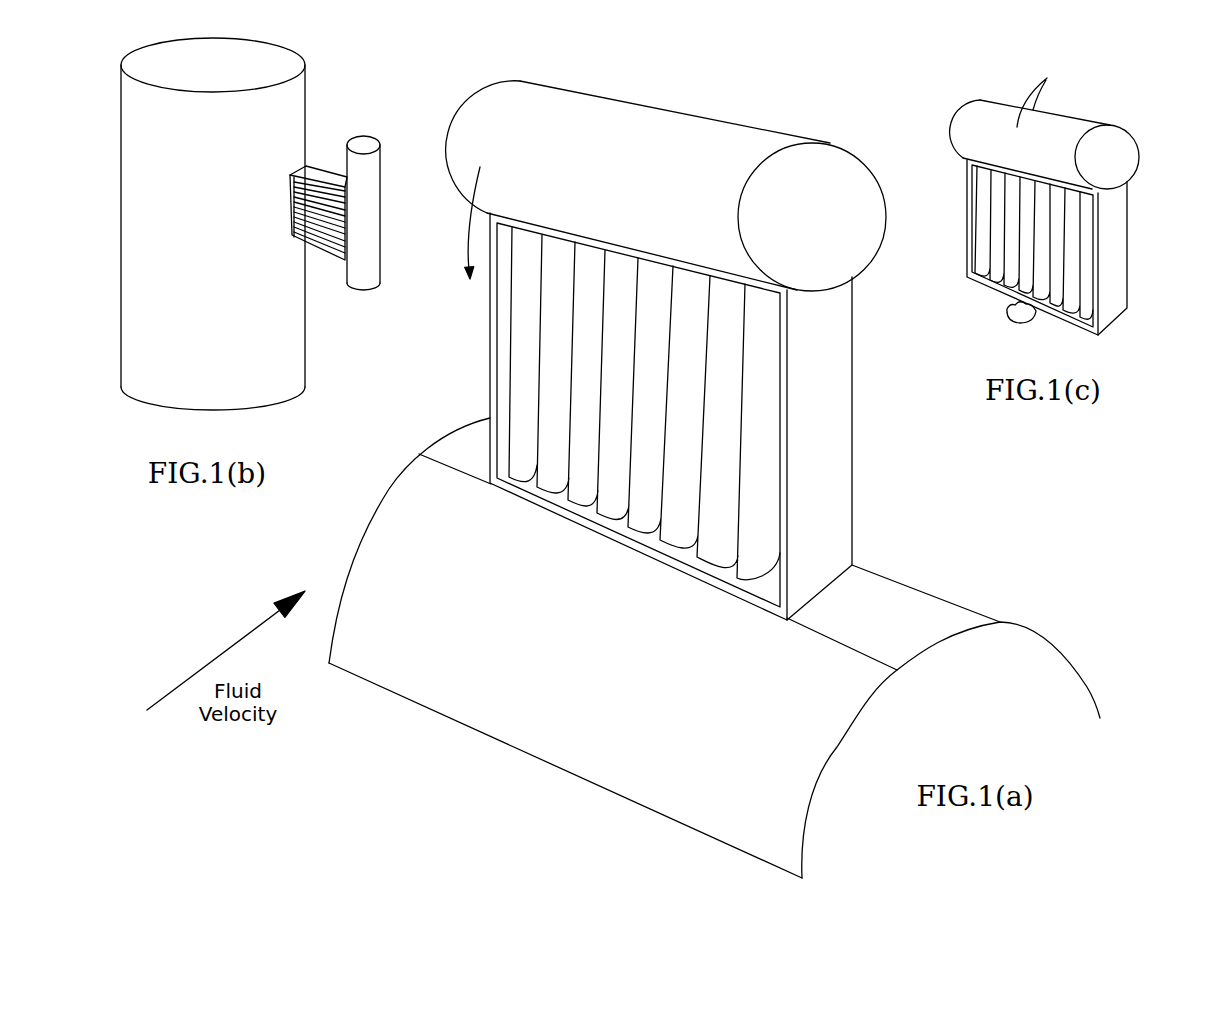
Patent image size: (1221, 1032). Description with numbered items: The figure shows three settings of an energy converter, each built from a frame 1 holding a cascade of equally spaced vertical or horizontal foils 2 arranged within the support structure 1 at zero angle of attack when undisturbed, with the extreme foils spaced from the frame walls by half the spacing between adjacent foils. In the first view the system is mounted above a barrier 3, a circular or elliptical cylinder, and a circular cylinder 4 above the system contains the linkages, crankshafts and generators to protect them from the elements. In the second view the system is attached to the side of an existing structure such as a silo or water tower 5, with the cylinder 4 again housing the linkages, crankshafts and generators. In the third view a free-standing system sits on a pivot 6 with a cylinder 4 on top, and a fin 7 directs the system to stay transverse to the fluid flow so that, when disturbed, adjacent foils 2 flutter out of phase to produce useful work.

In FIG. 1A, the frame 1 is at (655, 416).
In FIG. 1B, the frame 1 is at (272, 182).
In FIG. 1C, the frame 1 is at (1050, 247).
In FIG. 1A, the foils 2 is at (565, 355).
In FIG. 1B, the foils 2 is at (320, 206).
In FIG. 1C, the foils 2 is at (994, 224).
In FIG. 1A, the barrier 3 is at (912, 581).
In FIG. 1A, the circular cylinder 4 is at (646, 94).
In FIG. 1B, the circular cylinder 4 is at (373, 293).
In FIG. 1C, the circular cylinder 4 is at (1116, 115).
In FIG. 1B, the water tower 5 is at (117, 194).
In FIG. 1C, the pivot 6 is at (1031, 333).
In FIG. 1C, the fin 7 is at (1050, 84).